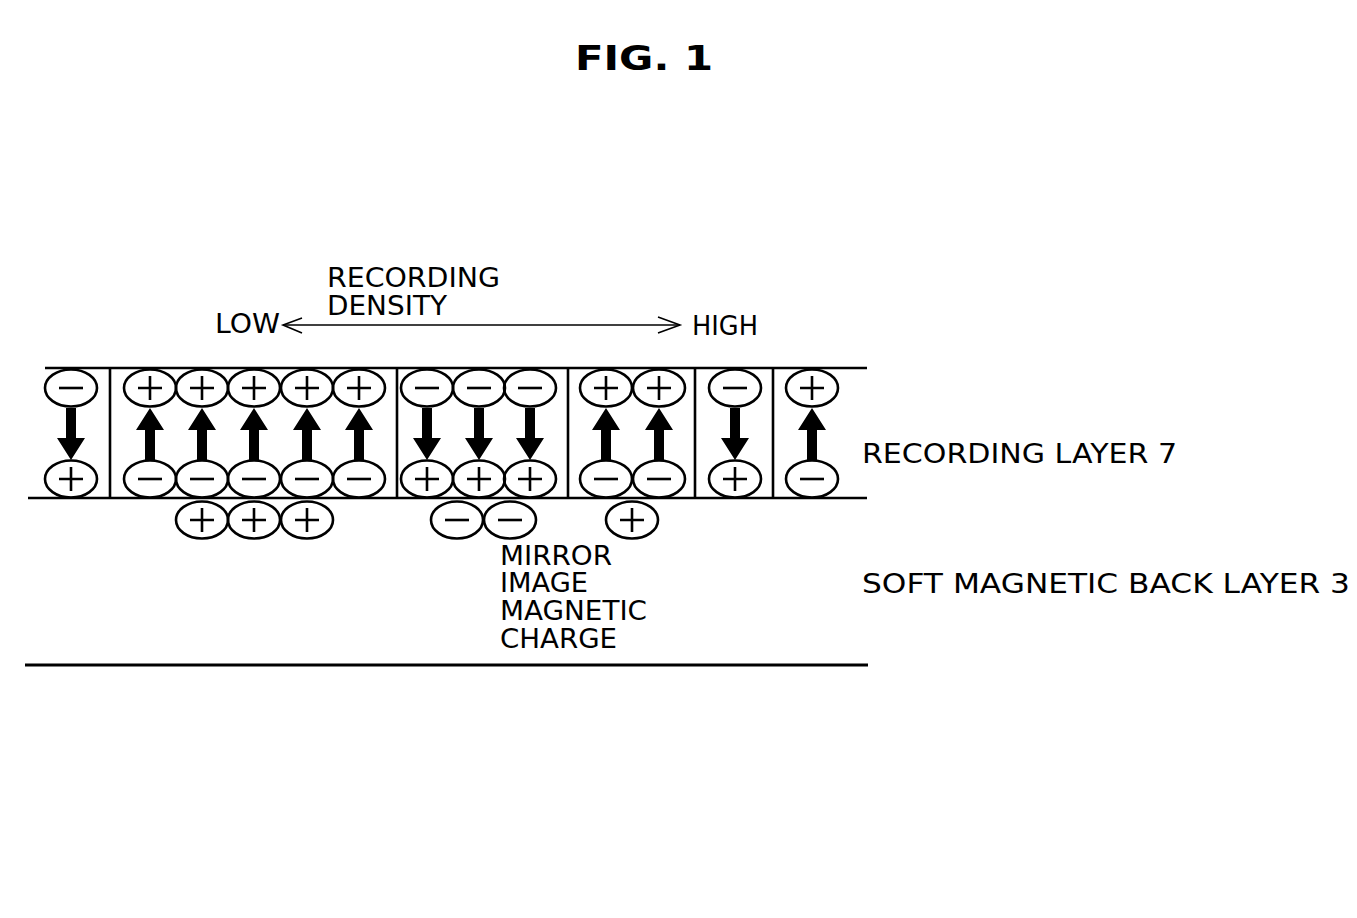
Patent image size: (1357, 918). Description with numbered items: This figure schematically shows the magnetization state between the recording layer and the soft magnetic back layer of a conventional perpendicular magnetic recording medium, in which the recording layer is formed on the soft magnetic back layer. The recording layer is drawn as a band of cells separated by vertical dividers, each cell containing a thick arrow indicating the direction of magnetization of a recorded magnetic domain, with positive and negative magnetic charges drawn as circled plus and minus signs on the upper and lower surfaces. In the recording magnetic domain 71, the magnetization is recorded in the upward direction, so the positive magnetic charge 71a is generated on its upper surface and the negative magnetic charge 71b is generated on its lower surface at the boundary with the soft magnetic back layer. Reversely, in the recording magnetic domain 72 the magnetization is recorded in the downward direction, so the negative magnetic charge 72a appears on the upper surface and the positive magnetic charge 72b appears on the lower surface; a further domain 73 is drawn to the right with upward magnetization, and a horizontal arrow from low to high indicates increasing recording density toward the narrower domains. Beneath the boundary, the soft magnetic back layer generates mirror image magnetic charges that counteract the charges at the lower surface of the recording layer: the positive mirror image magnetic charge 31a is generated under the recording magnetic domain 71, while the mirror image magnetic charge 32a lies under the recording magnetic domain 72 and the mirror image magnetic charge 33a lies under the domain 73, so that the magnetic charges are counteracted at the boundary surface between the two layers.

The recording magnetic domain 71 is at (160, 368).
The positive magnetic charge 71a is at (200, 368).
The negative magnetic charge 71b is at (143, 488).
The recording magnetic domain 72 is at (548, 368).
The negative magnetic charge 72a is at (483, 368).
The positive magnetic charge 72b is at (418, 488).
The third magnetization region (high recording density bit) 73 is at (632, 368).
The positive mirror image magnetic charge 31a is at (257, 532).
The mirror image magnetic charge of region 72 32a is at (460, 533).
The mirror image magnetic charge of region 73 33a is at (643, 533).